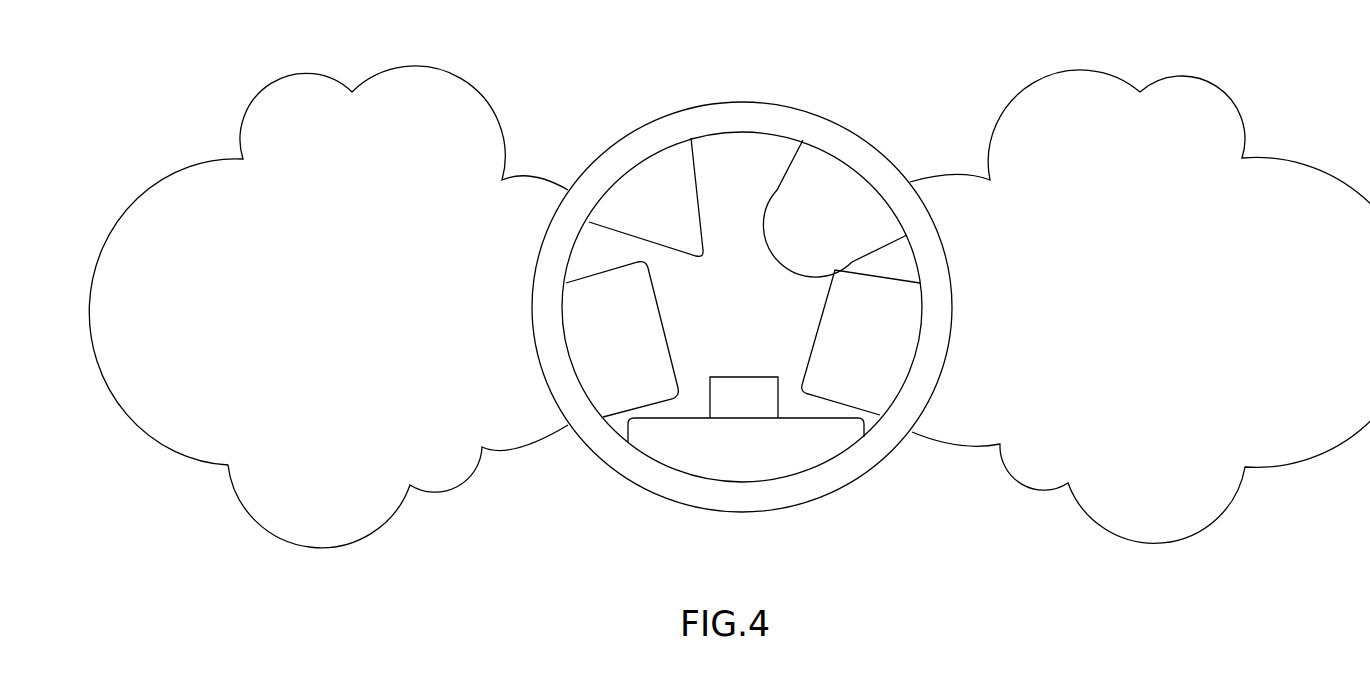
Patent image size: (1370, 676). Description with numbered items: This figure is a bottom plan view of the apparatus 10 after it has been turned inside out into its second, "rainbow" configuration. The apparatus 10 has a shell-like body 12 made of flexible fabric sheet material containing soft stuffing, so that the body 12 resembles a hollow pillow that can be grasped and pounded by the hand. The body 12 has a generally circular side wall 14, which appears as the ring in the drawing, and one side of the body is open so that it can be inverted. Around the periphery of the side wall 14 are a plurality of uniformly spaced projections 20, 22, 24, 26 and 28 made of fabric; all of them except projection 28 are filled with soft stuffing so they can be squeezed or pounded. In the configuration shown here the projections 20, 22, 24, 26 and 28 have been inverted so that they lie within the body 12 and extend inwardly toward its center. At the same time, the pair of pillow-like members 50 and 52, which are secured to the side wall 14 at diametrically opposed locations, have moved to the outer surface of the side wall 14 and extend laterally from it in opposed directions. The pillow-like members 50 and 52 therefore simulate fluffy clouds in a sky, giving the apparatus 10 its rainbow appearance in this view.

The apparatus 10 is at (742, 268).
The shell-like body 12 is at (809, 104).
The side wall 14 is at (847, 140).
The projection 20 is at (873, 385).
The projection 22 is at (860, 197).
The projection 24 is at (658, 182).
The projection 26 is at (612, 358).
The projection 28 is at (758, 455).
The pillow-like member 50 is at (1205, 97).
The pillow-like member 52 is at (433, 90).